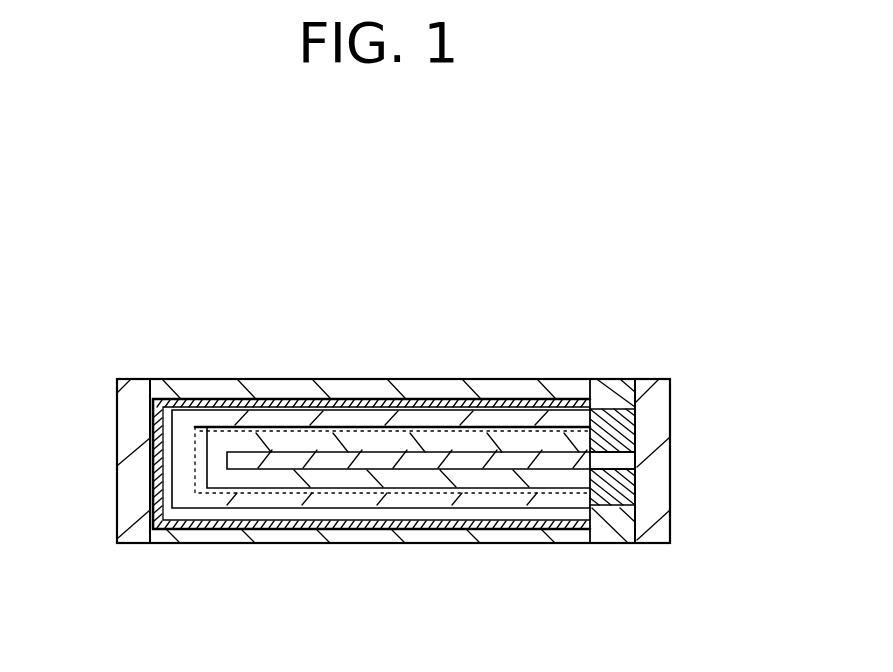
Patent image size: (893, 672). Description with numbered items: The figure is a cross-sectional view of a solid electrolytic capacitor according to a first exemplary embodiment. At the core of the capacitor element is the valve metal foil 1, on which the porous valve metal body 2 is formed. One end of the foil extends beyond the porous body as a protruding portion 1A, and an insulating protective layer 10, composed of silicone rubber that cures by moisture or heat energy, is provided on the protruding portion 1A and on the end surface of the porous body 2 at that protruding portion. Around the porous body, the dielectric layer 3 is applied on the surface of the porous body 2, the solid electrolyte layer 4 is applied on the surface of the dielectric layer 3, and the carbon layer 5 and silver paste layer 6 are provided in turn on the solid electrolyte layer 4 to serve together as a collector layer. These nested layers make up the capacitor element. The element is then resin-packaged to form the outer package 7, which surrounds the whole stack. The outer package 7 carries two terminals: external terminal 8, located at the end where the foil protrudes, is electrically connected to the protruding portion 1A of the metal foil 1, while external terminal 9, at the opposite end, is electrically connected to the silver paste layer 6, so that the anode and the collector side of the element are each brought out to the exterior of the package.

The valve metal foil 1 is at (278, 465).
The protruding portion 1A is at (637, 466).
The porous valve metal body 2 is at (418, 488).
The dielectric layer 3 is at (510, 492).
The solid electrolyte layer 4 is at (513, 425).
The carbon layer 5 is at (422, 398).
The silver paste layer 6 is at (205, 397).
The outer package 7 is at (297, 380).
The external terminal 8 is at (660, 425).
The external terminal 9 is at (118, 432).
The insulating protective layer 10 is at (594, 409).